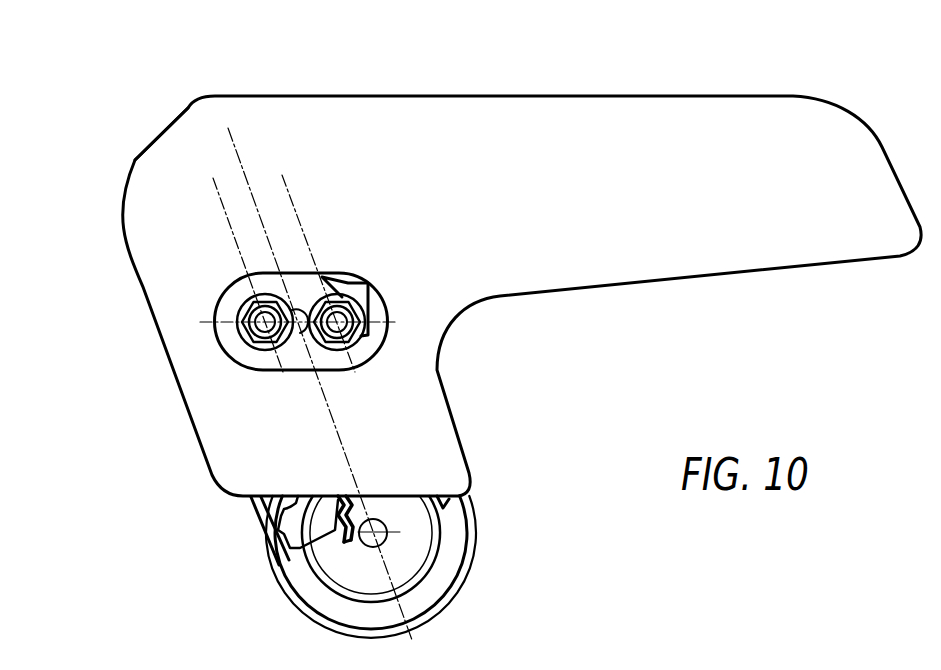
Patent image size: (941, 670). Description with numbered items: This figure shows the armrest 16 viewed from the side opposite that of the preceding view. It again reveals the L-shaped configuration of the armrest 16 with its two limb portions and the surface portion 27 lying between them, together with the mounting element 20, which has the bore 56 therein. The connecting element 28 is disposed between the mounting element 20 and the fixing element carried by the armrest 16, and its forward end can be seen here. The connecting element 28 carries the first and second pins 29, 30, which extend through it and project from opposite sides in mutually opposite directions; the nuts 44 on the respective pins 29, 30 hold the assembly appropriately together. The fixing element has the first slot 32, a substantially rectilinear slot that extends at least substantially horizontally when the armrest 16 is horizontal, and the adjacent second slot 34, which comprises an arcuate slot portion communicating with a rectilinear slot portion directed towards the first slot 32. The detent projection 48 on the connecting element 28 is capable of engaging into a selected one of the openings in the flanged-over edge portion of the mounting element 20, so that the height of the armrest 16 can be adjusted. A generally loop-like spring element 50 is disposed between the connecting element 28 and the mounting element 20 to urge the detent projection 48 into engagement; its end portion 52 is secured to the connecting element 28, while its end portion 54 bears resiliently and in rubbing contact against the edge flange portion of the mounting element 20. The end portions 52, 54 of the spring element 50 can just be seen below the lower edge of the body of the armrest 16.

The armrest 16 is at (625, 134).
The surface portion 27 is at (161, 133).
The first slot 32 is at (288, 272).
The second slot 34 is at (322, 277).
The first pin 29 is at (280, 351).
The second pin 30 is at (336, 352).
The nuts 44 is at (298, 349).
The mounting element 20 is at (447, 566).
The bore 56 is at (388, 535).
The end portion of second limb 54 is at (466, 501).
The spring element 50 is at (355, 512).
The end portion of first limb 52 is at (347, 543).
The detent projection 48 is at (300, 523).
The connecting element 28 is at (283, 546).